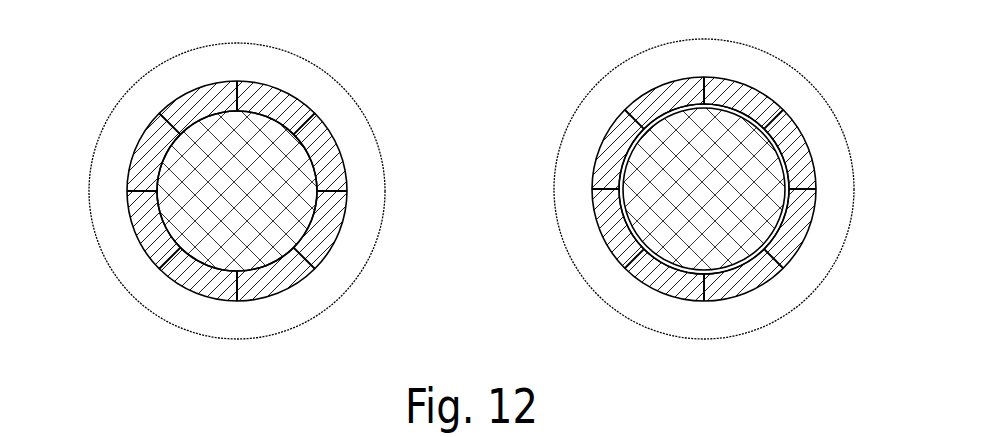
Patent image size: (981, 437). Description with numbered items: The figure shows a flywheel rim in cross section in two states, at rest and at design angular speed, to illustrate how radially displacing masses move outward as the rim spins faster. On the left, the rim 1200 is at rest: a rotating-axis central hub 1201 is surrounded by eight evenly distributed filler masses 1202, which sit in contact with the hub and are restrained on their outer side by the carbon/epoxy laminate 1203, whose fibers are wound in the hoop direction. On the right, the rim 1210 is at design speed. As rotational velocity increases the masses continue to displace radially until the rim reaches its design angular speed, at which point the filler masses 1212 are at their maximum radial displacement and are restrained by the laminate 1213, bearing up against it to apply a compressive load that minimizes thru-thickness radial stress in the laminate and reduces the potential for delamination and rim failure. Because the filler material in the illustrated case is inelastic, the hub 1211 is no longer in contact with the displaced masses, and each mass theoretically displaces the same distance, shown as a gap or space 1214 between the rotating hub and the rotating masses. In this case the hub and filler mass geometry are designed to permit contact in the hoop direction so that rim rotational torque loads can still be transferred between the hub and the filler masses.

The flywheel rim 1200 is at (236, 193).
The hub 1201 is at (198, 158).
The filler masses 1202 is at (330, 147).
The carbon/epoxy laminate 1203 is at (128, 283).
The flywheel rim 1210 is at (706, 180).
The hub 1211 is at (665, 175).
The filler masses 1212 is at (797, 147).
The laminate 1213 is at (613, 297).
The gap 1214 is at (720, 110).